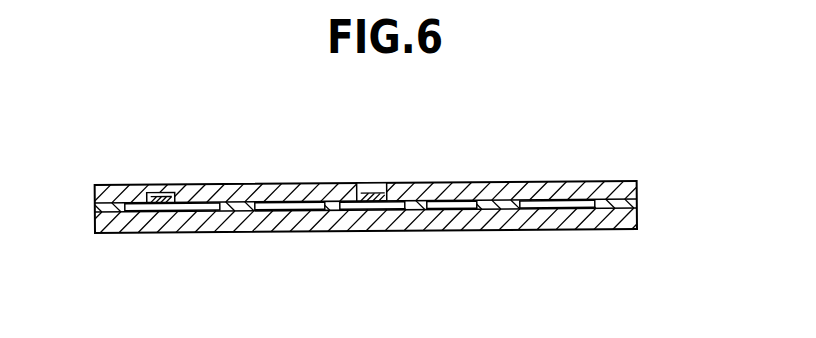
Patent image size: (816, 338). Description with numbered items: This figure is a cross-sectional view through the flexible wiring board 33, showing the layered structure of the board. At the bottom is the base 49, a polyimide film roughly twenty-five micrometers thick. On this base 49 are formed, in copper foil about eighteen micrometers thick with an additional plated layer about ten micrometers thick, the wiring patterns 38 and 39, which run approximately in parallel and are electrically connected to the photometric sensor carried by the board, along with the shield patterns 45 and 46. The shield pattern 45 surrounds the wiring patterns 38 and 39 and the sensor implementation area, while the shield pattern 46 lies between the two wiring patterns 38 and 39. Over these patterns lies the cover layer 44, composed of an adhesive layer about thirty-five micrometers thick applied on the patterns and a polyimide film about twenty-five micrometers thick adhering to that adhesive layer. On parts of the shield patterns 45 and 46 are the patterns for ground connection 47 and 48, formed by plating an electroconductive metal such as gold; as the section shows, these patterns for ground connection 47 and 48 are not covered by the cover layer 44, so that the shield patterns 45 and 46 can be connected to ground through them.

The flexible wiring board 33 is at (352, 233).
The wiring pattern 38 is at (259, 203).
The wiring pattern 39 is at (462, 197).
The cover layer 44 is at (537, 196).
The shield pattern 45 is at (140, 205).
The shield pattern 46 is at (393, 198).
The pattern for ground connection 47 is at (160, 197).
The pattern for ground connection 48 is at (372, 184).
The base 49 is at (522, 222).